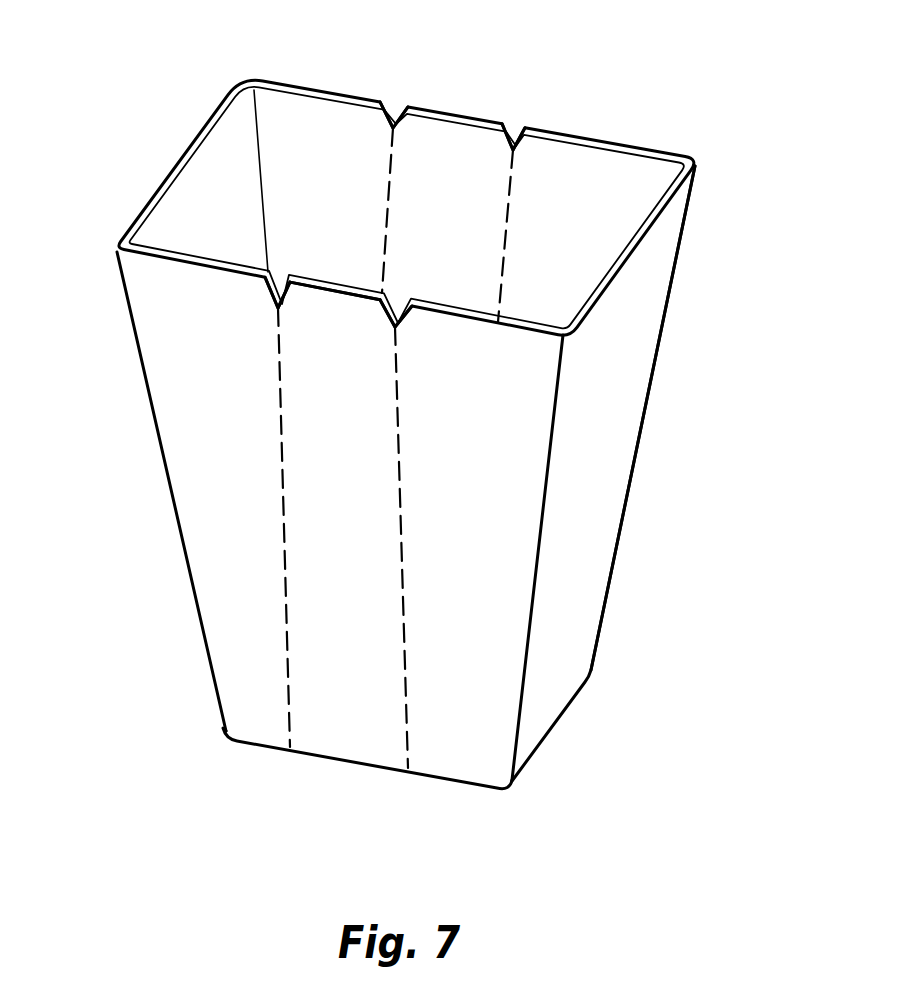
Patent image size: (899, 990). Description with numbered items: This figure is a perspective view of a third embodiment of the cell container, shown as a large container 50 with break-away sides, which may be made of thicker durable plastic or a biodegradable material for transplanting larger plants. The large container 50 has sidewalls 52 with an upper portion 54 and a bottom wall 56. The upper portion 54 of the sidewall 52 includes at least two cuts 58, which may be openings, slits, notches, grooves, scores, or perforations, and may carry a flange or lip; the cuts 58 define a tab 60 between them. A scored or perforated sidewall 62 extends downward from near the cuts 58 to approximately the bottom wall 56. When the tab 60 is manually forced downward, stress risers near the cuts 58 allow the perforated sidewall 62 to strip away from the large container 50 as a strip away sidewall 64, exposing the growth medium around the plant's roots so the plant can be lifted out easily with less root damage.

The large container 50 is at (578, 733).
The sidewall 52 is at (503, 472).
The upper portion 54 is at (457, 308).
The bottom wall 56 is at (448, 782).
The cuts 58 is at (273, 279).
The tab 60 is at (335, 298).
The perforated sidewall 62 is at (277, 450).
The strip away sidewall 64 is at (330, 545).